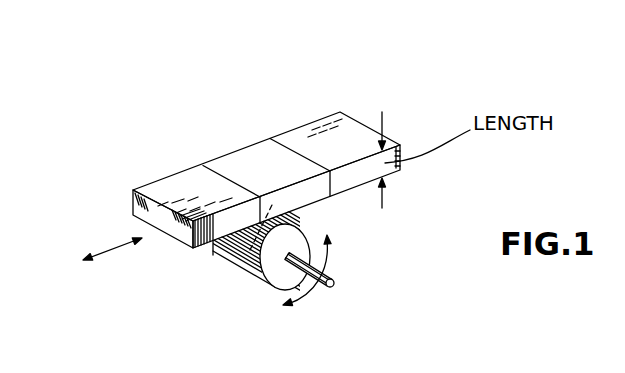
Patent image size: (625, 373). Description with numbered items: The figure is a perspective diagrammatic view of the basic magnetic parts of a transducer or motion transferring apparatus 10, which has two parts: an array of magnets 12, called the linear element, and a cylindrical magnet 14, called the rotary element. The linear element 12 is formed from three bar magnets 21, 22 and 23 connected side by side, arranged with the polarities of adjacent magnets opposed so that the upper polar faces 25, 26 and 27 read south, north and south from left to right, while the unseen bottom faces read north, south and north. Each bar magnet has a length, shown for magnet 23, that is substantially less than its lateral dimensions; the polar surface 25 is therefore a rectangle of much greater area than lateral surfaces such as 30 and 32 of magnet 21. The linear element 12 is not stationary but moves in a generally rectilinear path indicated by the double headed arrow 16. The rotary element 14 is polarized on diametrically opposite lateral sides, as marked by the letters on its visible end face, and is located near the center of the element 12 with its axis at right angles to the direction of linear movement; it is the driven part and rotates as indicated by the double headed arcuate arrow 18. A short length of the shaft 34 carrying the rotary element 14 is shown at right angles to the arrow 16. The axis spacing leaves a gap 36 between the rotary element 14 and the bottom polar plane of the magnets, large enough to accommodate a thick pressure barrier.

The motion transferring apparatus 10 is at (349, 80).
The array of magnets 12 is at (126, 200).
The cylindrical magnet 14 is at (270, 276).
The double headed arrow 16 is at (112, 258).
The double headed arcuate arrow 18 is at (327, 254).
The bar magnet 21 is at (160, 180).
The bar magnet 22 is at (223, 156).
The bar magnet 23 is at (302, 130).
The upper polar face 25 is at (170, 213).
The upper polar face 26 is at (257, 157).
The upper polar face 27 is at (330, 125).
The lateral surface 30 is at (133, 215).
The lateral surface 32 is at (202, 248).
The shaft 34 is at (332, 272).
The gap 36 is at (290, 218).